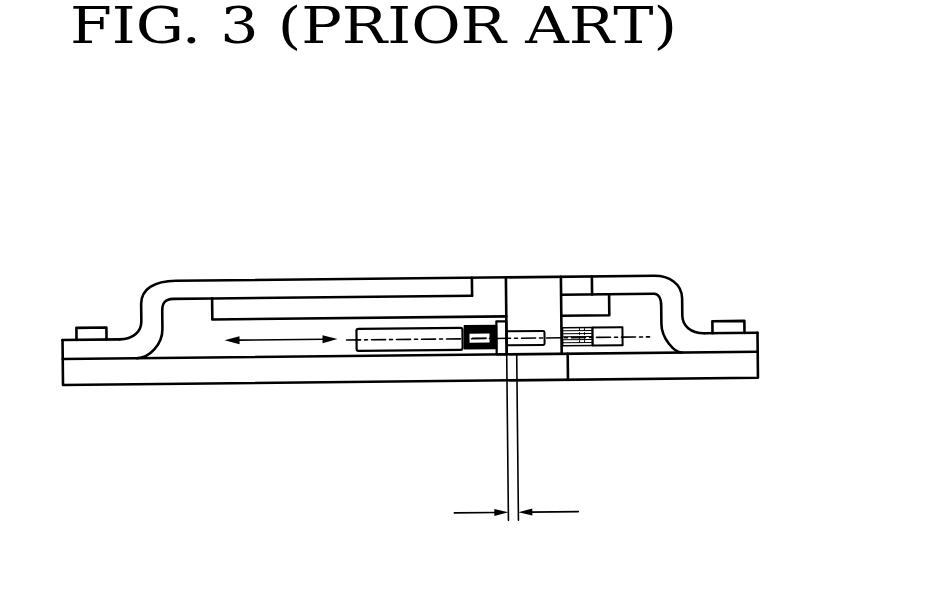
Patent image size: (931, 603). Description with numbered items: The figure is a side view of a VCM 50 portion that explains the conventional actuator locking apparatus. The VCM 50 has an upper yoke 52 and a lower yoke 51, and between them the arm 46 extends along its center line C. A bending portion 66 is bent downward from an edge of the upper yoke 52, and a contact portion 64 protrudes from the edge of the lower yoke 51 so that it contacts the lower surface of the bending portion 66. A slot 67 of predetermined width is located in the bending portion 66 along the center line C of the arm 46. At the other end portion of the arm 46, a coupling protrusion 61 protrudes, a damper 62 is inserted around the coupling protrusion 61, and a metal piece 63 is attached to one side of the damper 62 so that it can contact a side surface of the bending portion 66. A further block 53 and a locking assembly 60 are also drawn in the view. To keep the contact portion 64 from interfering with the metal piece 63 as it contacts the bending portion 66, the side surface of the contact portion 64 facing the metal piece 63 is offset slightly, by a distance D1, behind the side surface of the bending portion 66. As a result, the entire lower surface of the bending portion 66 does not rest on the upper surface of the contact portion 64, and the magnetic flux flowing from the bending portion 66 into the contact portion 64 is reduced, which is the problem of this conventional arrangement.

The VCM 50 is at (134, 256).
The lower yoke 51 is at (207, 383).
The upper yoke 52 is at (203, 292).
The guide block 53 is at (293, 310).
The arm 46 is at (372, 343).
The driving actuator 60 is at (486, 375).
The coupling protrusion 61 is at (463, 348).
The damper 62 is at (466, 328).
The metal piece 63 is at (500, 325).
The contact portion 64 is at (544, 372).
The bending portion 66 is at (545, 287).
The slot 67 is at (528, 330).
The center line C is at (643, 337).
The distance D1 is at (516, 500).